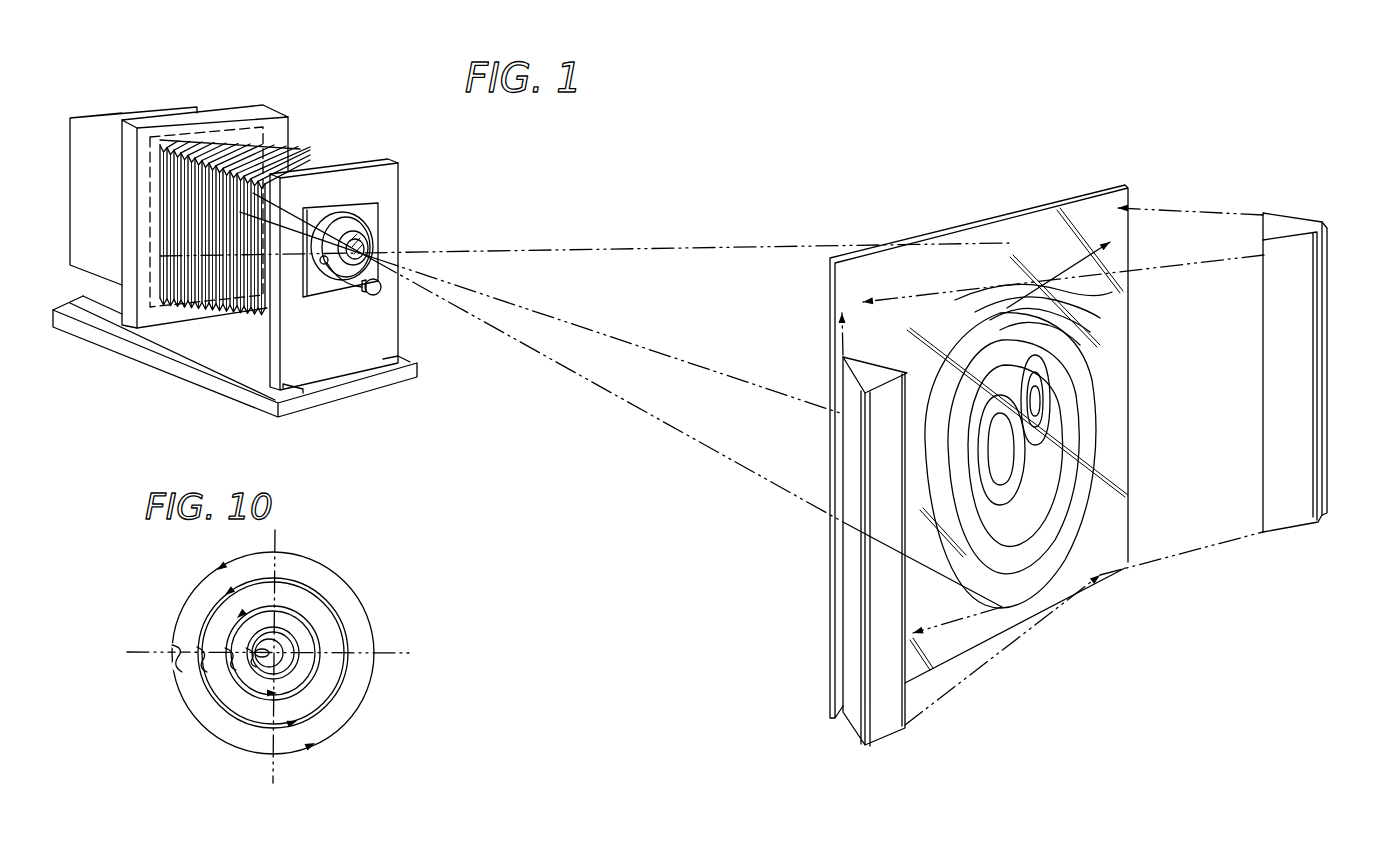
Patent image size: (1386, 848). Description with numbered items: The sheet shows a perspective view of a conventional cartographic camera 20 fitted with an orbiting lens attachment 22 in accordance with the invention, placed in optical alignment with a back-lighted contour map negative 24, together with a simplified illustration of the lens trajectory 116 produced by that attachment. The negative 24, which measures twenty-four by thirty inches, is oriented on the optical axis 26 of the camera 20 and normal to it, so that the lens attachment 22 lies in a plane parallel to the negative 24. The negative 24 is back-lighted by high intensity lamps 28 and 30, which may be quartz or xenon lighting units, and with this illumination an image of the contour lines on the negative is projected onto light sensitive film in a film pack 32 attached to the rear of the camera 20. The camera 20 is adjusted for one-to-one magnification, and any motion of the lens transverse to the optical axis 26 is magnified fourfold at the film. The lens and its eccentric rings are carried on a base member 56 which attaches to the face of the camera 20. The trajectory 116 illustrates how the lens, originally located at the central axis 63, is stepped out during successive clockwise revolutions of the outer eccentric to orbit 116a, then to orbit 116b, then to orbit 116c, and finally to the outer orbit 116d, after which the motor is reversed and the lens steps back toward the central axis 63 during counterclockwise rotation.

In FIG. 1, the cartographic camera 20 is at (343, 110).
In FIG. 1, the orbiting lens attachment 22 is at (397, 217).
In FIG. 1, the contour map negative 24 is at (897, 255).
In FIG. 1, the optical axis 26 is at (543, 312).
In FIG. 1, the high intensity lamp 28 is at (883, 725).
In FIG. 1, the high intensity lamp 30 is at (1299, 428).
In FIG. 1, the film pack 32 is at (105, 120).
In FIG. 1, the base member 56 is at (323, 283).
In FIG. 10, the trajectory 116 is at (377, 552).
In FIG. 10, the central axis 63 is at (273, 653).
In FIG. 10, the first orbit 116a is at (293, 668).
In FIG. 10, the second orbit 116b is at (297, 688).
In FIG. 10, the third orbit 116c is at (293, 723).
In FIG. 10, the outer orbit 116d is at (263, 752).